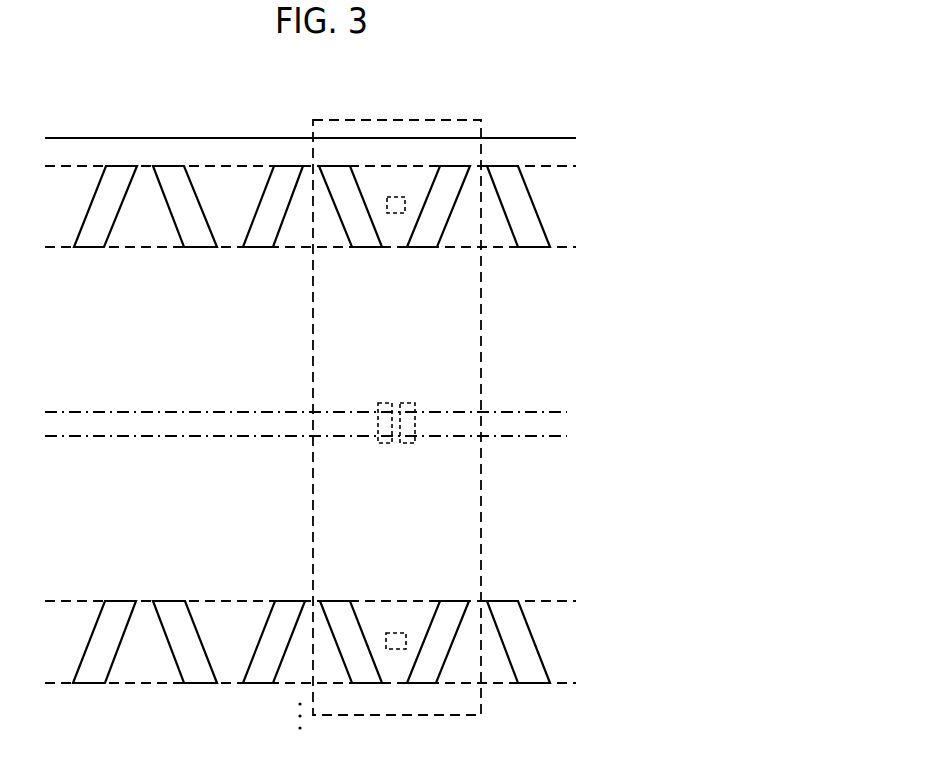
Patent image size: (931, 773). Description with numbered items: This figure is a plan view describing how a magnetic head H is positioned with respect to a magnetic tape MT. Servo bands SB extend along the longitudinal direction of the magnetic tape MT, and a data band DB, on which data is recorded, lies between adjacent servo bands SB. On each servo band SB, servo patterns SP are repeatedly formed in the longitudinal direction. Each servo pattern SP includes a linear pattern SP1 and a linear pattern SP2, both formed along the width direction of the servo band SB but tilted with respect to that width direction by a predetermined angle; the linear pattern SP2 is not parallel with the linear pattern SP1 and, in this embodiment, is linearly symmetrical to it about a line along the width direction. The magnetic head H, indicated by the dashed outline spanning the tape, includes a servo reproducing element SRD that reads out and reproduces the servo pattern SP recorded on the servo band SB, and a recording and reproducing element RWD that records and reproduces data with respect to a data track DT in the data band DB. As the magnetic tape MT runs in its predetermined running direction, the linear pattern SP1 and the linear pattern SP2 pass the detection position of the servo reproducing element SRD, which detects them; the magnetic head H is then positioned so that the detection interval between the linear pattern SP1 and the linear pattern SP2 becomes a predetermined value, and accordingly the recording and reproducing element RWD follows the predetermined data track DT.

The magnetic tape MT is at (528, 138).
The magnetic head H is at (395, 120).
The servo band SB is at (346, 424).
The servo pattern SP is at (145, 259).
The linear pattern SP1 is at (112, 247).
The linear pattern SP2 is at (185, 234).
The servo reproducing element SRD is at (396, 213).
The recording and reproducing element RWD is at (418, 397).
The data band DB is at (562, 343).
The data track DT is at (562, 425).